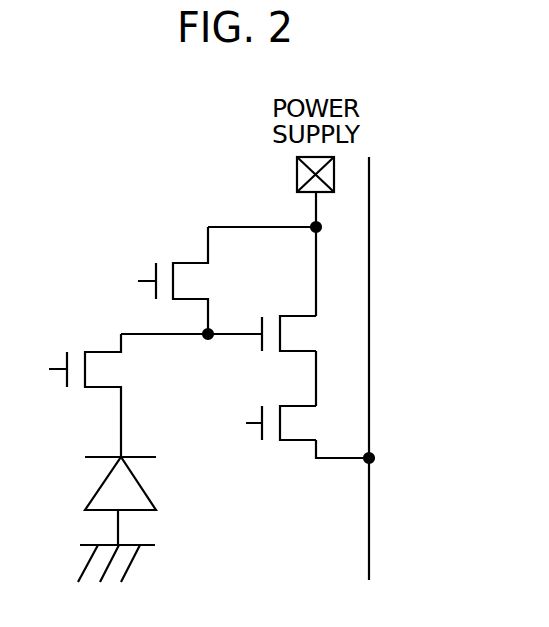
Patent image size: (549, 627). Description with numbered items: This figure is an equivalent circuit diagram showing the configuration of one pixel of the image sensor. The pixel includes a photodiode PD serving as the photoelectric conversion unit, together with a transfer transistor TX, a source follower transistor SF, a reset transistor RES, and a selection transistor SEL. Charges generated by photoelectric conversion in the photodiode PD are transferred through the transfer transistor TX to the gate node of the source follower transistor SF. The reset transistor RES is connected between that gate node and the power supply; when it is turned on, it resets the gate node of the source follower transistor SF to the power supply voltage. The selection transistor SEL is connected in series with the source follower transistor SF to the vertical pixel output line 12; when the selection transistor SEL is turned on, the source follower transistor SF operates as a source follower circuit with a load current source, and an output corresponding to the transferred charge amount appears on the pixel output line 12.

The pixel output line 12 is at (369, 568).
The reset transistor RES is at (164, 280).
The transfer transistor TX is at (83, 388).
The source follower transistor SF is at (287, 318).
The selection transistor SEL is at (278, 443).
The photodiode PD is at (98, 519).